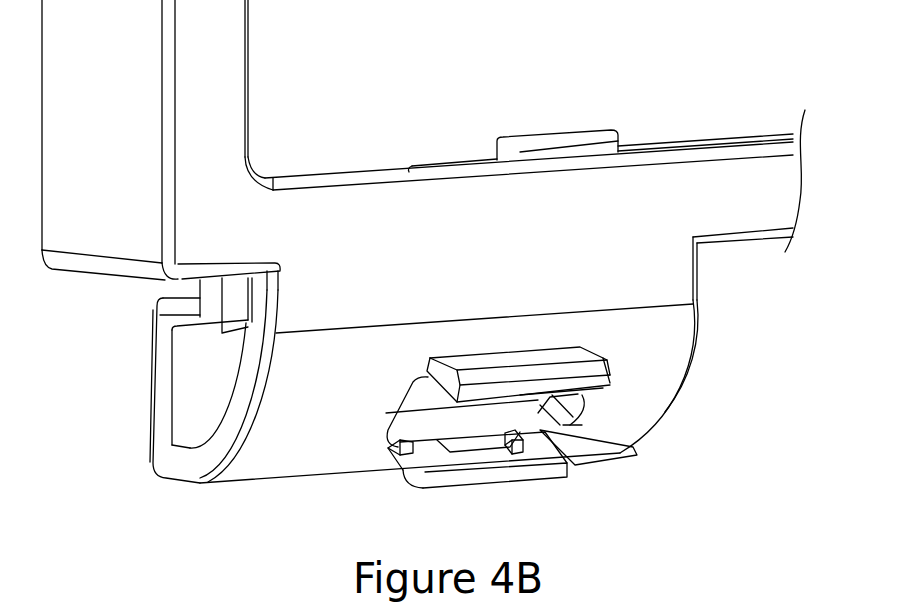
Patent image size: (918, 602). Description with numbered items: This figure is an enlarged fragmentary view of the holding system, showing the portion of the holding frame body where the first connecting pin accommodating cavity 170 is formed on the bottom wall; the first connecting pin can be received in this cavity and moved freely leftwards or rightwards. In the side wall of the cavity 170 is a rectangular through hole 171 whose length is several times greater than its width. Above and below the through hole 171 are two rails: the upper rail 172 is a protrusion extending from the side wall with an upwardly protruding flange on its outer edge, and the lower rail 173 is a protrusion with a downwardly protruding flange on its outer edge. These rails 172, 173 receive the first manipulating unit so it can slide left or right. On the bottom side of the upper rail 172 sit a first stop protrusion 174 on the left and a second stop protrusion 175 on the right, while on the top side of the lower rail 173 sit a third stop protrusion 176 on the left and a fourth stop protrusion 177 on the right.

The first connecting pin accommodating cavity 170 is at (178, 410).
The through hole 171 is at (578, 410).
The upper rail 172 is at (450, 385).
The lower rail 173 is at (413, 472).
The first stop protrusion 174 is at (433, 378).
The second stop protrusion 175 is at (603, 388).
The third stop protrusion 176 is at (387, 449).
The fourth stop protrusion 177 is at (570, 467).